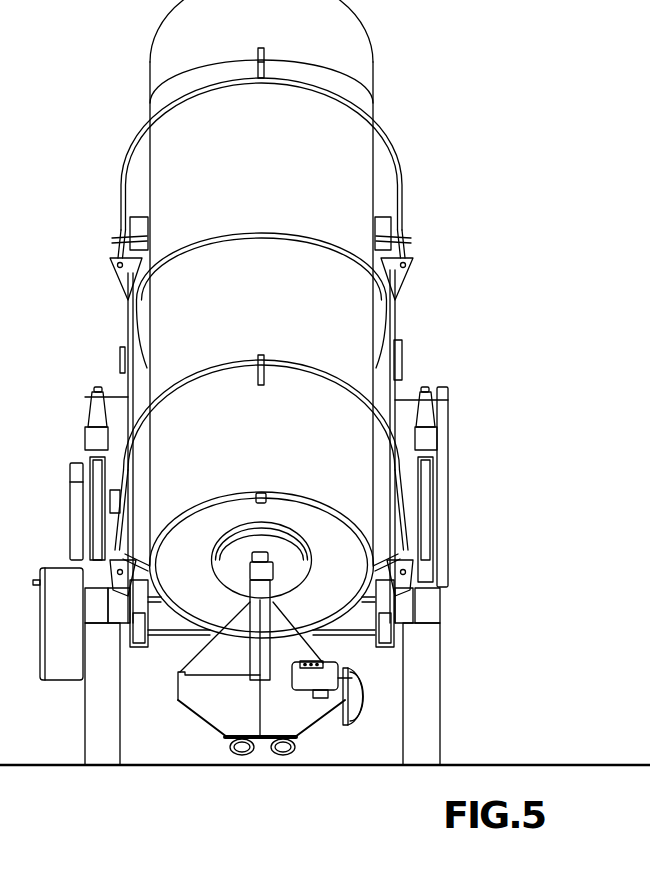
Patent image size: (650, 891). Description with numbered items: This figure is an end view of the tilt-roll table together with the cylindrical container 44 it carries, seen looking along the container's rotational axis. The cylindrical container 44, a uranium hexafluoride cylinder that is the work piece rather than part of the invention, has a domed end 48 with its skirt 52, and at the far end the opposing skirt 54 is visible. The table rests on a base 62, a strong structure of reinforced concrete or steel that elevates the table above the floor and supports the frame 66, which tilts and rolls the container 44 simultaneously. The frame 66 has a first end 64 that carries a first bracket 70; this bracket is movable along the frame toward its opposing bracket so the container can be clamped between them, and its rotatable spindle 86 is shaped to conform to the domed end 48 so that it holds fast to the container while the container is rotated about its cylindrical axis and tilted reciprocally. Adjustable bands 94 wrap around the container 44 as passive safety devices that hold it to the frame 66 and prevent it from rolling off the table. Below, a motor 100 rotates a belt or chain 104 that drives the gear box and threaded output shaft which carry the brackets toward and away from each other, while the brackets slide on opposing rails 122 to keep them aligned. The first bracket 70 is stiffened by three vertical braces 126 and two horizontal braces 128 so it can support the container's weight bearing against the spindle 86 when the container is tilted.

The cylindrical container 44 is at (313, 330).
The domed end 48 is at (205, 526).
The skirt 52 is at (350, 507).
The skirt 54 is at (340, 58).
The base 62 is at (428, 708).
The first end 64 is at (137, 647).
The frame 66 is at (390, 597).
The first bracket 70 is at (237, 728).
The spindle 86 is at (222, 567).
The adjustable bands 94 is at (165, 100).
The motor 100 is at (340, 665).
The belt or chain 104 is at (367, 723).
The rails 122 is at (277, 750).
The vertical braces 126 is at (203, 663).
The horizontal braces 128 is at (205, 707).